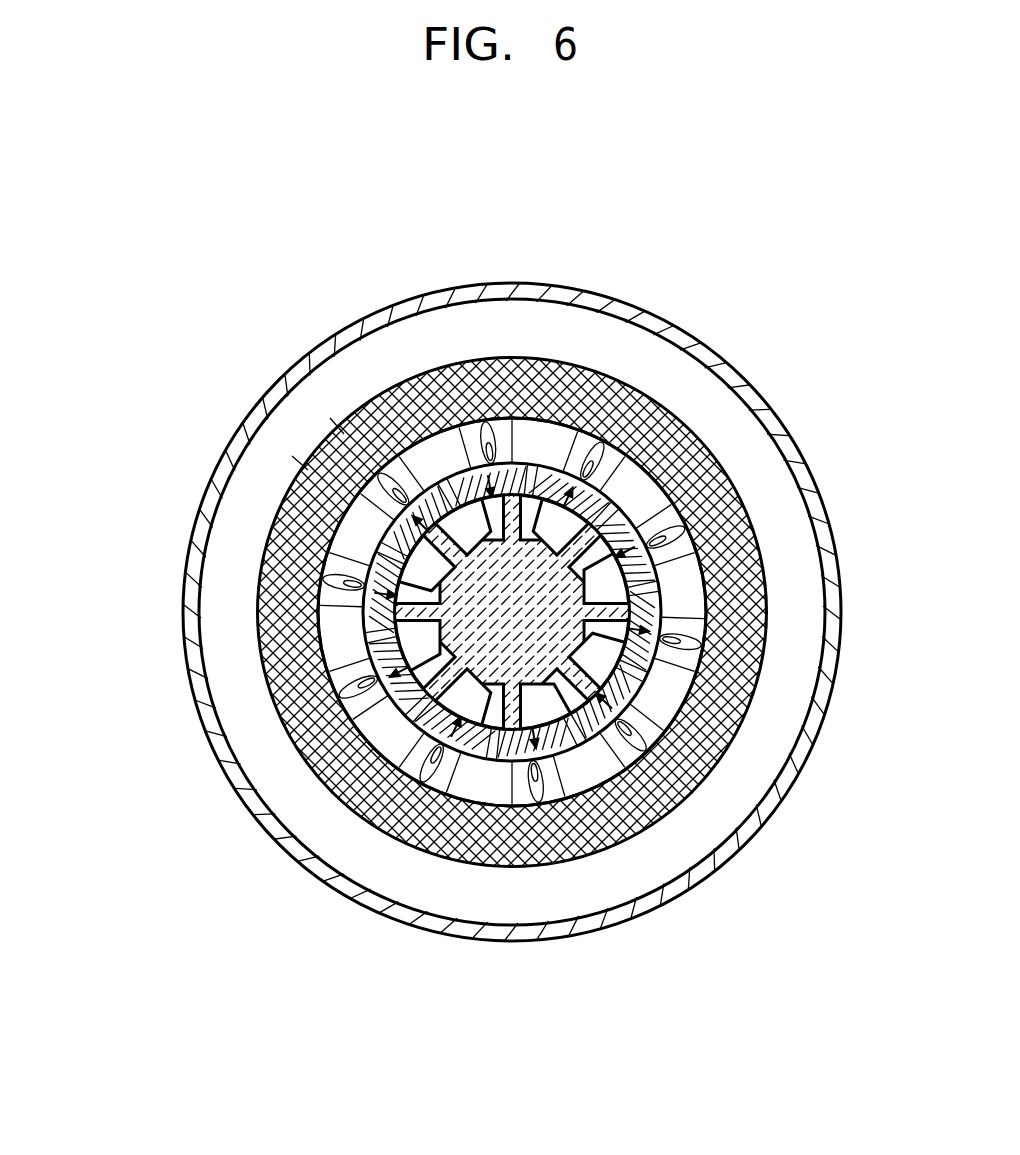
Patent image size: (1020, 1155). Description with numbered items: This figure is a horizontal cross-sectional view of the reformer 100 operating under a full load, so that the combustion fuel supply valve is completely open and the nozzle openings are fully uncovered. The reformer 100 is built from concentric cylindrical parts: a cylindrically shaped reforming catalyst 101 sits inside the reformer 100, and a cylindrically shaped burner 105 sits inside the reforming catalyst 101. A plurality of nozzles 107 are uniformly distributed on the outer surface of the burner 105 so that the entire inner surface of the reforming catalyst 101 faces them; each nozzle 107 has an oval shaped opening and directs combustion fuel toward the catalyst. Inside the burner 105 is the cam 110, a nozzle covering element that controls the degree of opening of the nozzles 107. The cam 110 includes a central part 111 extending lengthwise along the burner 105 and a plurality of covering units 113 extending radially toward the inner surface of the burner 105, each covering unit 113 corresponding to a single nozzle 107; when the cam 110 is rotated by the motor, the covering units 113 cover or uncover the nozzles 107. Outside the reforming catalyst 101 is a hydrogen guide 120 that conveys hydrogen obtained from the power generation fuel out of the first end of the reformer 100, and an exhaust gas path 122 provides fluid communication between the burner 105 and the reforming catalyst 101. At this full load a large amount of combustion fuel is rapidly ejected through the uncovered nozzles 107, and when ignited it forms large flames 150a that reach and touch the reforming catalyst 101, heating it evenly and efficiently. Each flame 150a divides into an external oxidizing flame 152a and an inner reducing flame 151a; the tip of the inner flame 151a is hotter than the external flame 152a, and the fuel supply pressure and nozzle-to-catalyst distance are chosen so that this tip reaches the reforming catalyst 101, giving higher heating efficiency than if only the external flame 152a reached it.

The reformer 100 is at (766, 286).
The reforming catalyst 101 is at (613, 391).
The burner 105 is at (400, 385).
The nozzles 107 is at (683, 581).
The cam 110 is at (348, 612).
The central part 111 is at (407, 564).
The covering units 113 is at (398, 611).
The hydrogen guide 120 is at (767, 401).
The exhaust gas path 122 is at (537, 438).
The flames 150a is at (237, 373).
The inner flame 151a is at (337, 425).
The external flame 152a is at (300, 461).